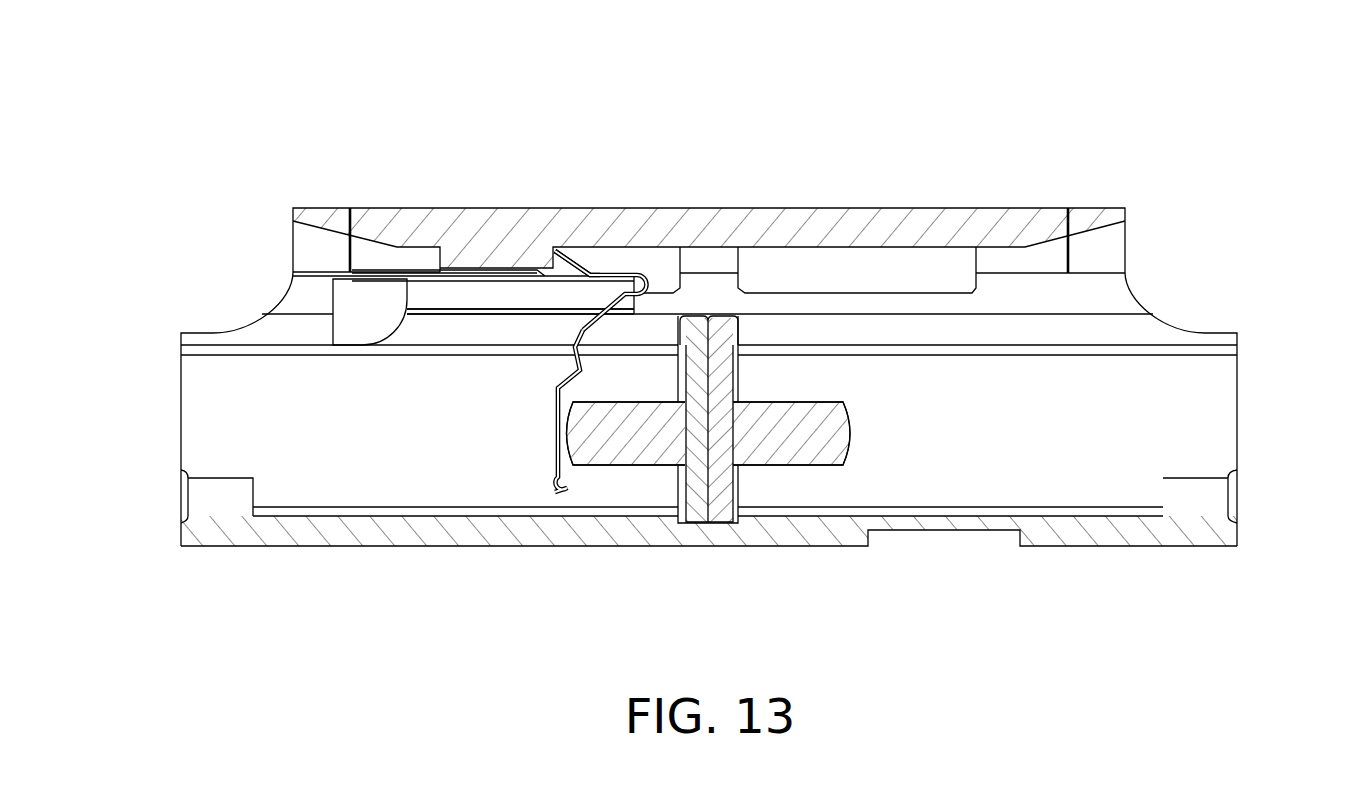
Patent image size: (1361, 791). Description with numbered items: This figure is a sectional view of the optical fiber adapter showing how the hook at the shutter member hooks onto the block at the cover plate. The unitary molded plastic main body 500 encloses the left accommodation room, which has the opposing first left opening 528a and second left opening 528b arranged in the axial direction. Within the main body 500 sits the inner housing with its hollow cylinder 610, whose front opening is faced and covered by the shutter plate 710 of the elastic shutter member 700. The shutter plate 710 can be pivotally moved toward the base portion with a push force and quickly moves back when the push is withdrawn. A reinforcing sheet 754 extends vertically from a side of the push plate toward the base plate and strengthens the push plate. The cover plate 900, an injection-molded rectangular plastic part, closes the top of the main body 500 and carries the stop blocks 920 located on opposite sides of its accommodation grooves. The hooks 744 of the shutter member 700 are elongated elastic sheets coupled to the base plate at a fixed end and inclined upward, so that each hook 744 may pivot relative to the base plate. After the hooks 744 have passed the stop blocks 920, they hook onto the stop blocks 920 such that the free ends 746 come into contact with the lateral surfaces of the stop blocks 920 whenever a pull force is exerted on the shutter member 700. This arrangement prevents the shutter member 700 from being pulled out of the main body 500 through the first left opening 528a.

The cover plate 900 is at (795, 150).
The main body 500 is at (1052, 573).
The first left opening 528a is at (154, 419).
The second left opening 528b is at (1259, 452).
The reinforcing sheet 754 is at (368, 303).
The stop block 920 is at (510, 262).
The shutter member 700 is at (480, 308).
The shutter plate 710 is at (546, 453).
The hook 744 is at (555, 247).
The free end 746 is at (575, 270).
The hollow cylinder 610 is at (625, 438).